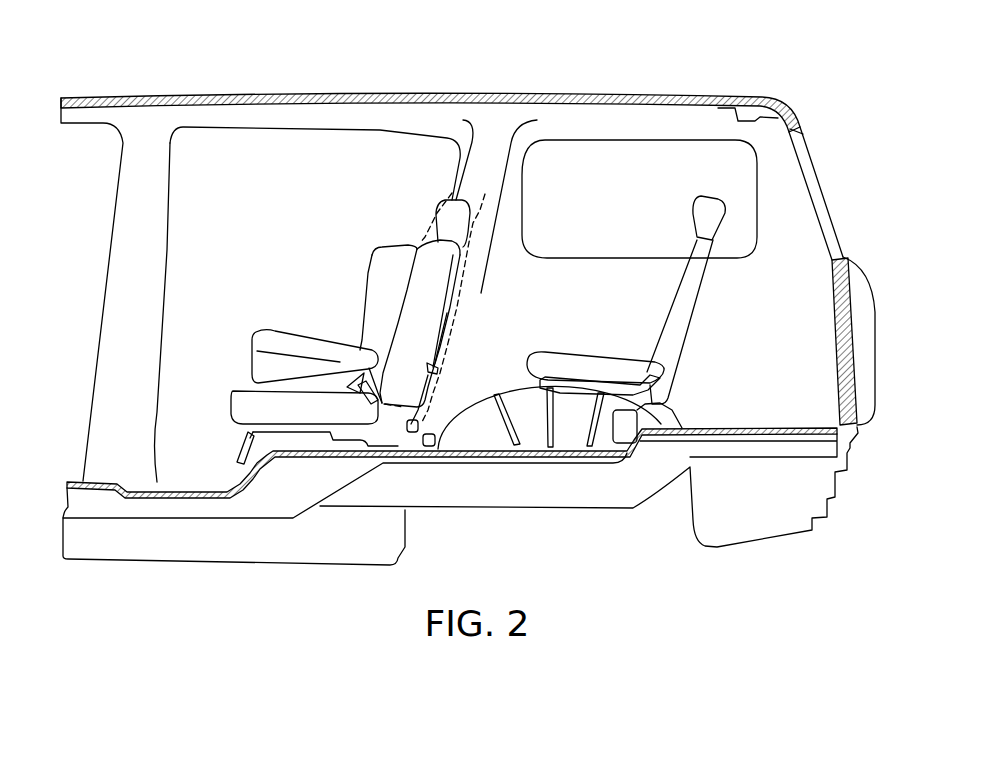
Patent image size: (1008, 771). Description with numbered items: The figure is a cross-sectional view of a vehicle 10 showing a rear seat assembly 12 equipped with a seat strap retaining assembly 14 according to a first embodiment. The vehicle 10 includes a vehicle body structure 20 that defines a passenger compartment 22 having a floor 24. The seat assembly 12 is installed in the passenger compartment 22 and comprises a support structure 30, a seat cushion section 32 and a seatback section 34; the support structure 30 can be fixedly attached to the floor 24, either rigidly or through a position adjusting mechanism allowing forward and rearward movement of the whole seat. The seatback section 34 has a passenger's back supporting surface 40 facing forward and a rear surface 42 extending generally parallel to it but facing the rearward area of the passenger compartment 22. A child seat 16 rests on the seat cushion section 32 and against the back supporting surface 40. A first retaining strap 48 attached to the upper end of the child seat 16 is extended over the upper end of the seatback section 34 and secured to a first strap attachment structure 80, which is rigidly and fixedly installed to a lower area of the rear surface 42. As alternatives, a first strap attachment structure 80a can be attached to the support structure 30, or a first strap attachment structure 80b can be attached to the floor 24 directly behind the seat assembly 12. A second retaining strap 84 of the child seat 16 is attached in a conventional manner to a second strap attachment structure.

The vehicle 10 is at (163, 33).
The seat assembly 12 is at (418, 244).
The seat strap retaining assembly 14 is at (473, 290).
The child seat 16 is at (307, 330).
The vehicle body structure 20 is at (634, 97).
The passenger compartment 22 is at (253, 181).
The floor 24 is at (196, 484).
The support structure 30 is at (345, 438).
The seat cushion section 32 is at (243, 405).
The seatback section 34 is at (426, 291).
The passenger's back supporting surface 40 is at (372, 308).
The rear surface 42 is at (447, 314).
The first retaining strap 48 is at (481, 207).
The first strap attachment structure 80 is at (430, 377).
The first strap attachment structure 80a is at (418, 453).
The first strap attachment structure 80b is at (461, 442).
The second retaining strap 84 is at (357, 396).